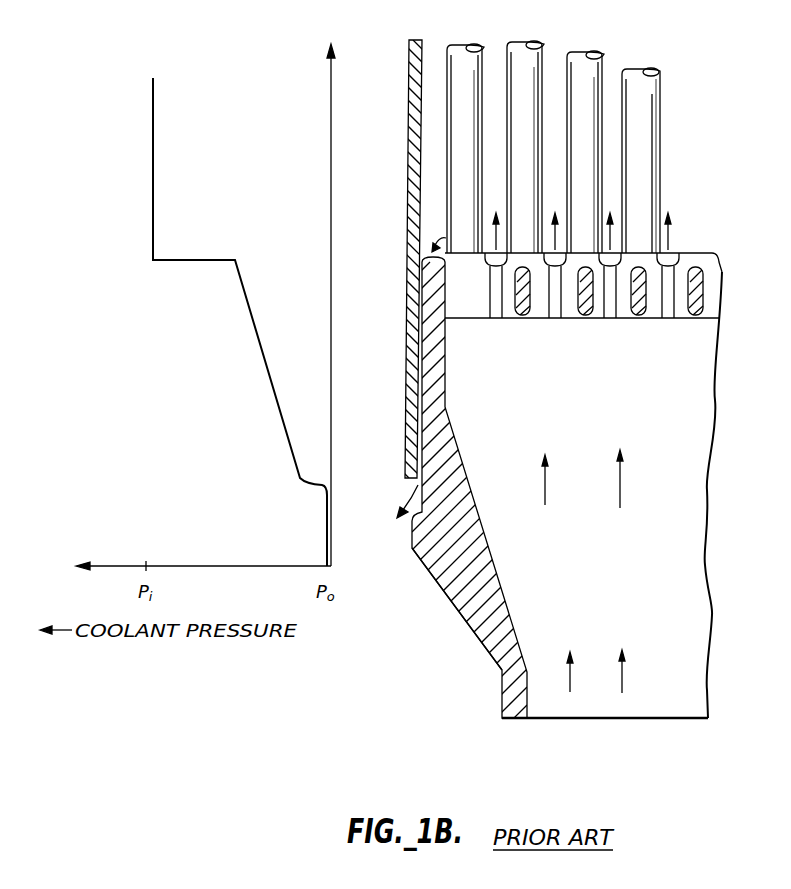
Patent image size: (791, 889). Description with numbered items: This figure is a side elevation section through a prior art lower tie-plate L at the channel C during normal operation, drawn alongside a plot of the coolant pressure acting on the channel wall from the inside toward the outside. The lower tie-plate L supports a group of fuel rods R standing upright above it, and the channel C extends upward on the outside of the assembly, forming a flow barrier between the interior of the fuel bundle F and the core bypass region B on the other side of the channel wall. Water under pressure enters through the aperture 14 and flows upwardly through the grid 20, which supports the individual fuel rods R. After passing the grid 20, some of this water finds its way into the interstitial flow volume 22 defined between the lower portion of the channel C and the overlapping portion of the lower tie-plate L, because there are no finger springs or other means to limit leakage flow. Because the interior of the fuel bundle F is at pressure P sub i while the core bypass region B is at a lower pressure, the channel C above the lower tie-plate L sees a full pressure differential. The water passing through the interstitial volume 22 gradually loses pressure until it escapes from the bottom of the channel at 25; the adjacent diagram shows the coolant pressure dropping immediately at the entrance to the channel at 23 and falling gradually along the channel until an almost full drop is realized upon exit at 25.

The aperture 14 is at (629, 625).
The grid 20 is at (462, 326).
The interstitial flow volume 22 is at (424, 424).
The entrance to the channel 23 is at (413, 251).
The exit from the bottom of the channel 25 is at (419, 480).
The core bypass region B is at (390, 156).
The channel C is at (418, 392).
The fuel rods R is at (660, 99).
The fuel bundle F is at (730, 191).
The lower tie-plate L is at (462, 630).